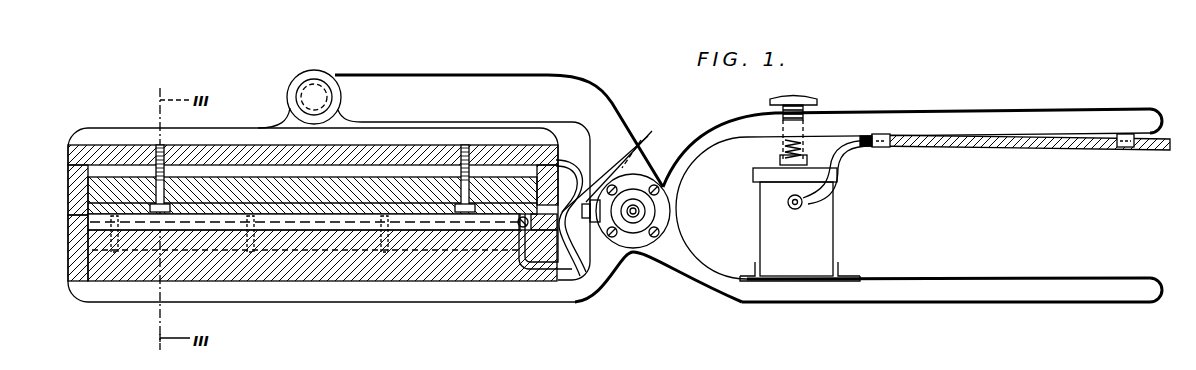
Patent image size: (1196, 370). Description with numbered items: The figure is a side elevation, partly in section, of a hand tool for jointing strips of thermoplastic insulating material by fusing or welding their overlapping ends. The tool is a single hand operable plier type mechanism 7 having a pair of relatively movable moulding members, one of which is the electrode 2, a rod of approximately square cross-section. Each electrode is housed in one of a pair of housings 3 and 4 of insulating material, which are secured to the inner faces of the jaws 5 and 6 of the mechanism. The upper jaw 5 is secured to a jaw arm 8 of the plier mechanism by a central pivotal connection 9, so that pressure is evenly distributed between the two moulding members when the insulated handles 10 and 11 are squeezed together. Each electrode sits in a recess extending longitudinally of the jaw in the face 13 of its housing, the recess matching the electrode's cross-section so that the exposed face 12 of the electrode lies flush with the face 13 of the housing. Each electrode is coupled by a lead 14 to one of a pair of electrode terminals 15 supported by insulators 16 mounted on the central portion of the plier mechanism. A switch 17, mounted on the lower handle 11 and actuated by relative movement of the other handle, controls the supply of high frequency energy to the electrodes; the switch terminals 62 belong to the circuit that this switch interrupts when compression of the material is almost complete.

The electrode 2 is at (359, 274).
The housing 3 is at (229, 156).
The housing 4 is at (272, 277).
The upper jaw 5 is at (102, 137).
The jaw 6 is at (160, 293).
The plier type mechanism 7 is at (660, 108).
The jaw arm 8 is at (442, 103).
The central pivotal connection 9 is at (303, 97).
The insulated handle 10 is at (886, 125).
The lower handle 11 is at (942, 290).
The exposed face of electrode 12 is at (512, 267).
The face of housing 13 is at (572, 177).
The lead 14 is at (612, 166).
The electrode terminal 15 is at (634, 216).
The insulator 16 is at (662, 209).
The switch 17 is at (817, 222).
The switch terminal 62 is at (811, 95).